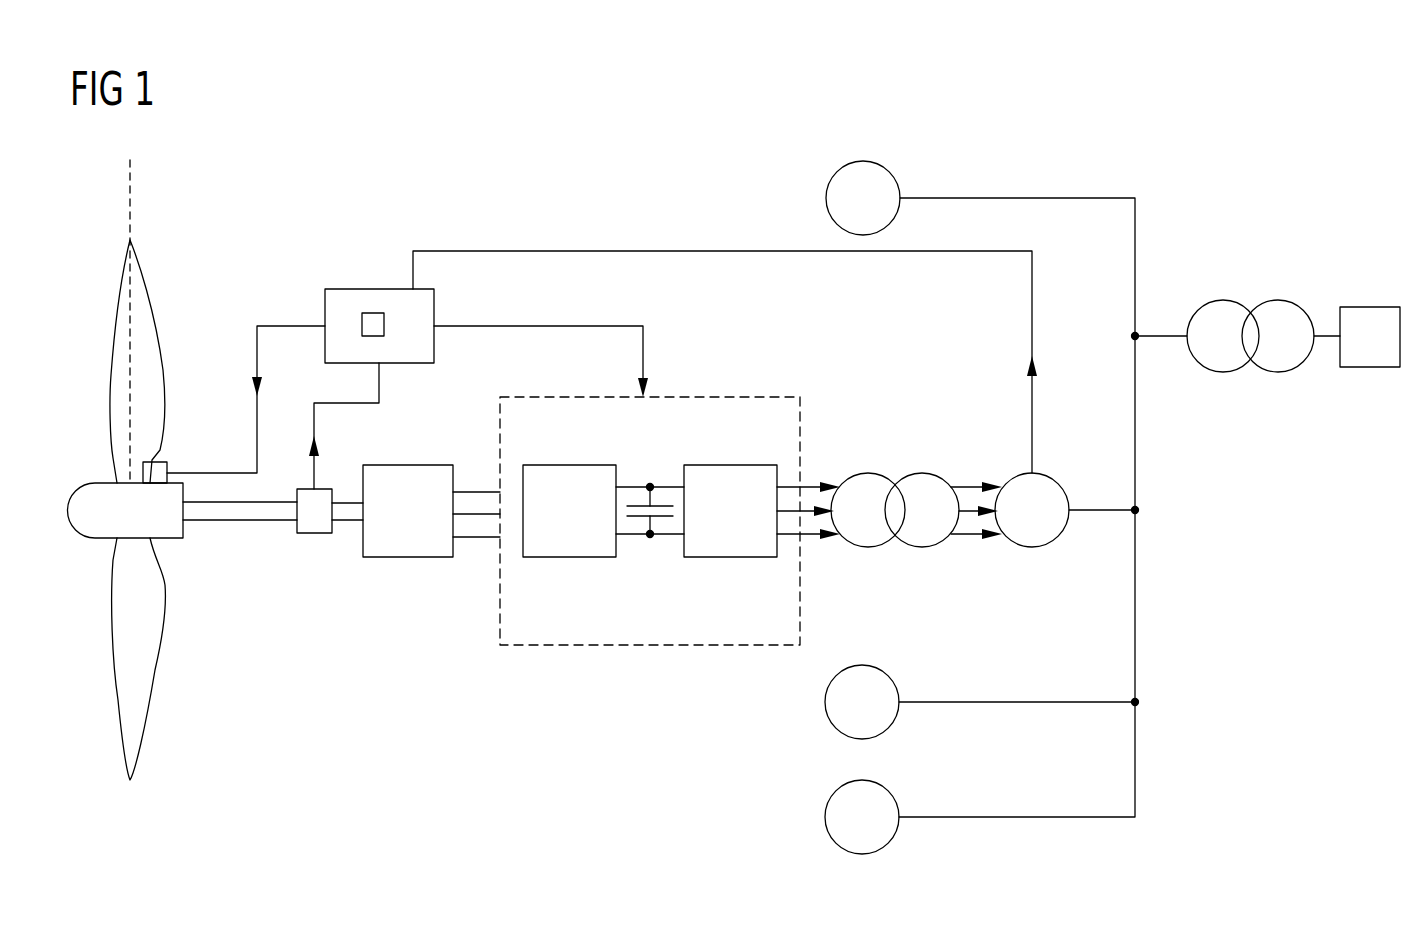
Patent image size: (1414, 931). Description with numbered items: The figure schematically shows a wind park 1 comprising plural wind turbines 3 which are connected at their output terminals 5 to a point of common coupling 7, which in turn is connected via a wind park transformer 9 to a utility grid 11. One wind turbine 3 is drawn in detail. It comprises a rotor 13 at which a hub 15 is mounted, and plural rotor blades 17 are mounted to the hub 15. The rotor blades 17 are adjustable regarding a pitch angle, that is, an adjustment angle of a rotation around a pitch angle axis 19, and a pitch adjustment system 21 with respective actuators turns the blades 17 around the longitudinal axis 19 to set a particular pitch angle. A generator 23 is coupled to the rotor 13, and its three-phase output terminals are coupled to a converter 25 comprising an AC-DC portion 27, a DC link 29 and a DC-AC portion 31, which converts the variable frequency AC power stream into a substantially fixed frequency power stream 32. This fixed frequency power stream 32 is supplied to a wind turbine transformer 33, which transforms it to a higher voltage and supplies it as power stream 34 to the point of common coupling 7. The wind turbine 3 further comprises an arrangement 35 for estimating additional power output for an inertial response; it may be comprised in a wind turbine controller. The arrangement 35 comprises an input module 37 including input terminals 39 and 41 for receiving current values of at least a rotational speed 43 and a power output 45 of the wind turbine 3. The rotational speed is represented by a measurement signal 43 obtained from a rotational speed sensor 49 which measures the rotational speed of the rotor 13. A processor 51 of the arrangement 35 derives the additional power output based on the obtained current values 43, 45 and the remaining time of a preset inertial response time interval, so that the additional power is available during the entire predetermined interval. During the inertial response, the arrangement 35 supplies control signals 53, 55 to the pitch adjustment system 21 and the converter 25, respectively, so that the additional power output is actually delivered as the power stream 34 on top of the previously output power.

The wind park 1 is at (1290, 192).
The wind turbine 3 is at (455, 200).
The output terminal 5 is at (1093, 522).
The point of common coupling 7 is at (1140, 334).
The wind park transformer 9 is at (1280, 300).
The utility grid 11 is at (1370, 305).
The rotor 13 is at (241, 521).
The hub 15 is at (100, 493).
The rotor blade 17 is at (145, 308).
The pitch angle axis 19 is at (133, 201).
The pitch adjustment system 21 is at (164, 466).
The generator 23 is at (407, 557).
The converter 25 is at (757, 395).
The AC-DC portion 27 is at (570, 463).
The DC link 29 is at (655, 549).
The DC-AC portion 31 is at (731, 463).
The fixed frequency power stream 32 is at (831, 486).
The wind turbine transformer 33 is at (925, 472).
The power stream 34 is at (993, 484).
The arrangement for estimating additional power output 35 is at (347, 287).
The input module 37 is at (450, 308).
The input terminal 39 is at (410, 285).
The input terminal 41 is at (383, 365).
The rotational speed measurement signal 43 is at (320, 443).
The power output 45 is at (1038, 368).
The rotational speed sensor 49 is at (318, 535).
The processor 51 is at (360, 322).
The control signal 53 is at (254, 396).
The control signal 55 is at (649, 392).